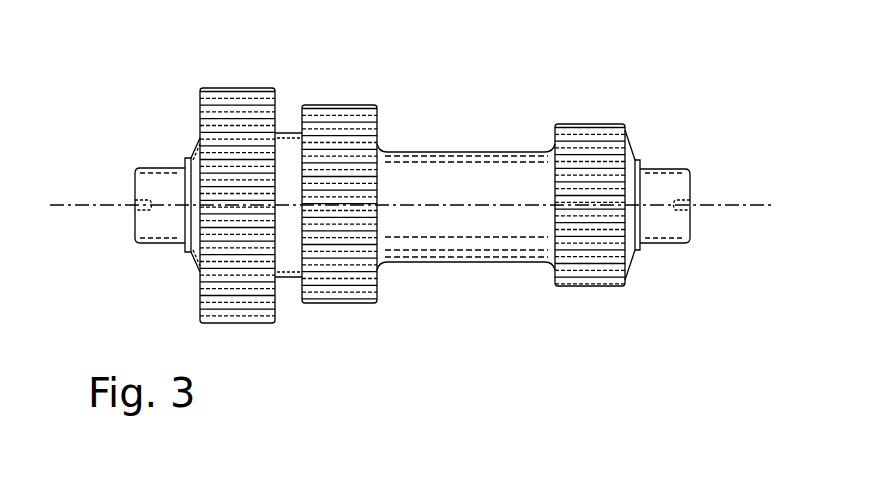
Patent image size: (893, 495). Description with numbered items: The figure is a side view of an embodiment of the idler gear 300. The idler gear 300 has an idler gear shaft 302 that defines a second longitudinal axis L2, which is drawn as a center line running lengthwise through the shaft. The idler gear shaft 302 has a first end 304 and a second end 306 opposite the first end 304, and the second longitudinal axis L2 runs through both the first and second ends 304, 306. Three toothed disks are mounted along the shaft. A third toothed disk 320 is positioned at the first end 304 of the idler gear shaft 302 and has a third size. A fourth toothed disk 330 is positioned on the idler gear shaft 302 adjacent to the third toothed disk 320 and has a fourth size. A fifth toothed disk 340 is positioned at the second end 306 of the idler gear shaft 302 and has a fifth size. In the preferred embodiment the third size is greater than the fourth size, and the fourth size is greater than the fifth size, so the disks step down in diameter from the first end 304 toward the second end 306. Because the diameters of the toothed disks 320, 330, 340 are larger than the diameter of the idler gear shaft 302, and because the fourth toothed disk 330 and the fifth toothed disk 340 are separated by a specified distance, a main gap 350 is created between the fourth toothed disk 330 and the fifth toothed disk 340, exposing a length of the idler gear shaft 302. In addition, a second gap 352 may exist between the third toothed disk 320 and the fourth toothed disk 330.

The idler gear 300 is at (145, 60).
The idler gear shaft 302 is at (432, 151).
The first end 304 is at (148, 266).
The second end 306 is at (650, 279).
The third toothed disk 320 is at (230, 88).
The fourth toothed disk 330 is at (335, 105).
The fifth toothed disk 340 is at (600, 124).
The main gap 350 is at (495, 108).
The second gap 352 is at (286, 309).
The second longitudinal axis L2 is at (742, 203).